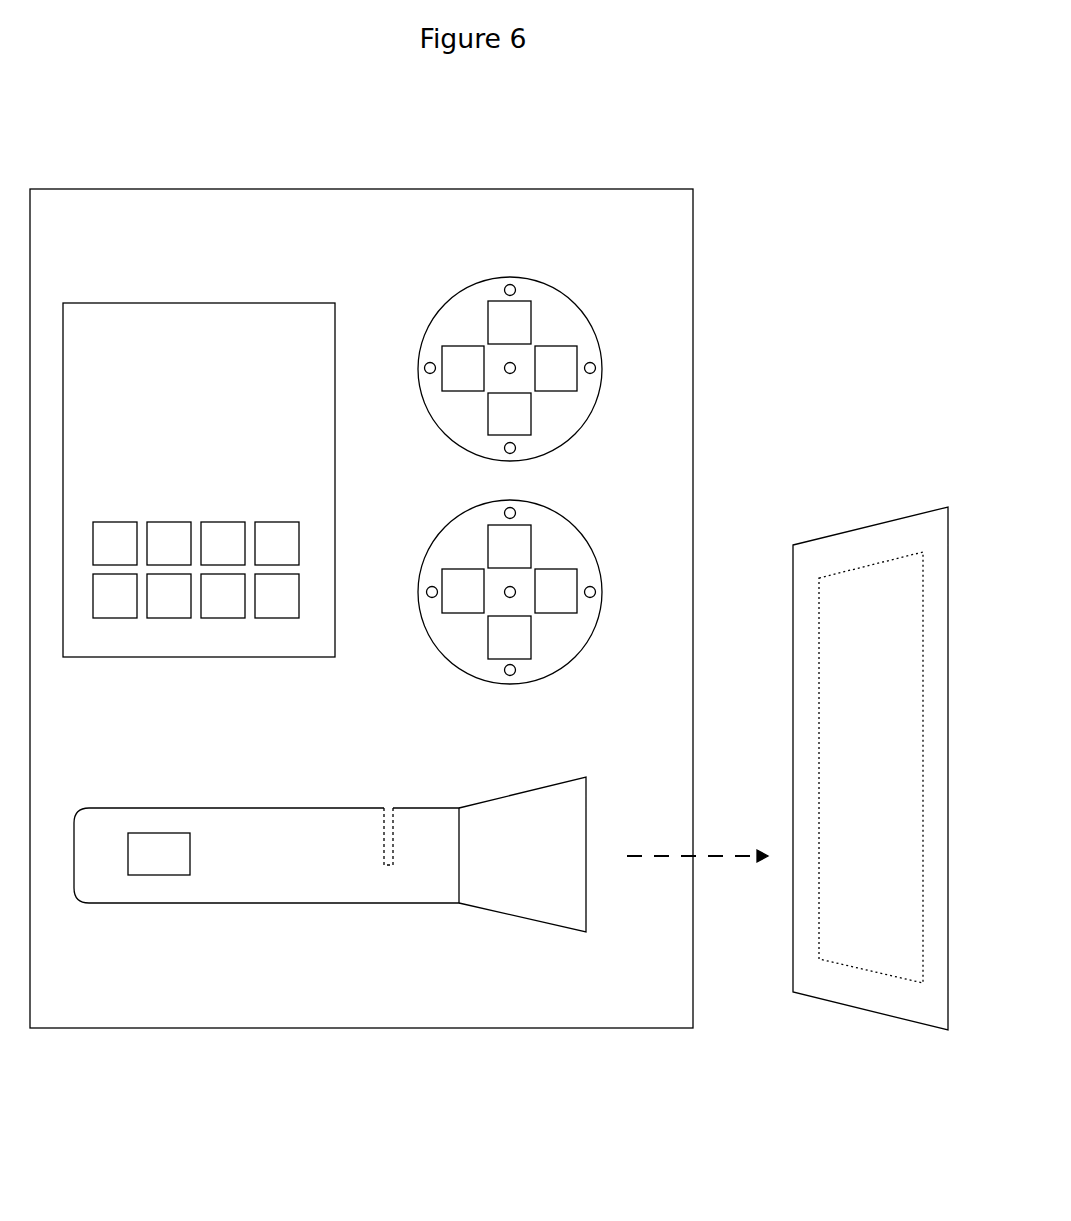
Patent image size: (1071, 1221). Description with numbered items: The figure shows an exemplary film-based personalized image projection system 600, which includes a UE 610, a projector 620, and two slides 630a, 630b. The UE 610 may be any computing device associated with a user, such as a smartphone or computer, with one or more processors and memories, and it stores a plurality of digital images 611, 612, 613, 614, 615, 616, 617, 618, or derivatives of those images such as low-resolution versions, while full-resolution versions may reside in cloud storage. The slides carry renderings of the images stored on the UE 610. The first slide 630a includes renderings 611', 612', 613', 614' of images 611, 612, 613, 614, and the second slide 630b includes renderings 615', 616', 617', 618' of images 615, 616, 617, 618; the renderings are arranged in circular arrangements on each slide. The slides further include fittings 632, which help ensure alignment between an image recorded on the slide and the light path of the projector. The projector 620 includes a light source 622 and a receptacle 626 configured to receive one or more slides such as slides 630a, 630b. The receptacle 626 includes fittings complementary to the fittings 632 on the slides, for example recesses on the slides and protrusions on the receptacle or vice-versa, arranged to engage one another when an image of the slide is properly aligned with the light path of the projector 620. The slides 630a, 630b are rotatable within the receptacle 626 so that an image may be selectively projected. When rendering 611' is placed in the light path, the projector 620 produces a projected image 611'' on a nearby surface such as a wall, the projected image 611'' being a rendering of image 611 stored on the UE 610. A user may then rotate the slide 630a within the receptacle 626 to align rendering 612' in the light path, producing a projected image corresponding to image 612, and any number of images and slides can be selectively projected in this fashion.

The film-based personalized image projection system 600 is at (361, 636).
The UE 610 is at (199, 480).
The digital image 611 is at (115, 543).
The digital image 612 is at (169, 543).
The digital image 613 is at (223, 543).
The digital image 614 is at (277, 543).
The digital image 615 is at (115, 596).
The digital image 616 is at (169, 596).
The digital image 617 is at (223, 596).
The digital image 618 is at (277, 596).
The rendering 611' is at (509, 322).
The rendering 612' is at (556, 368).
The rendering 613' is at (509, 414).
The rendering 614' is at (463, 368).
The rendering 615' is at (509, 546).
The rendering 616' is at (556, 591).
The rendering 617' is at (509, 637).
The rendering 618' is at (463, 591).
The first slide 630a is at (555, 308).
The second slide 630b is at (573, 540).
The fittings 632 is at (506, 282).
The projector 620 is at (278, 822).
The light source 622 is at (159, 854).
The receptacle 626 is at (390, 807).
The projected image 611'' is at (870, 768).